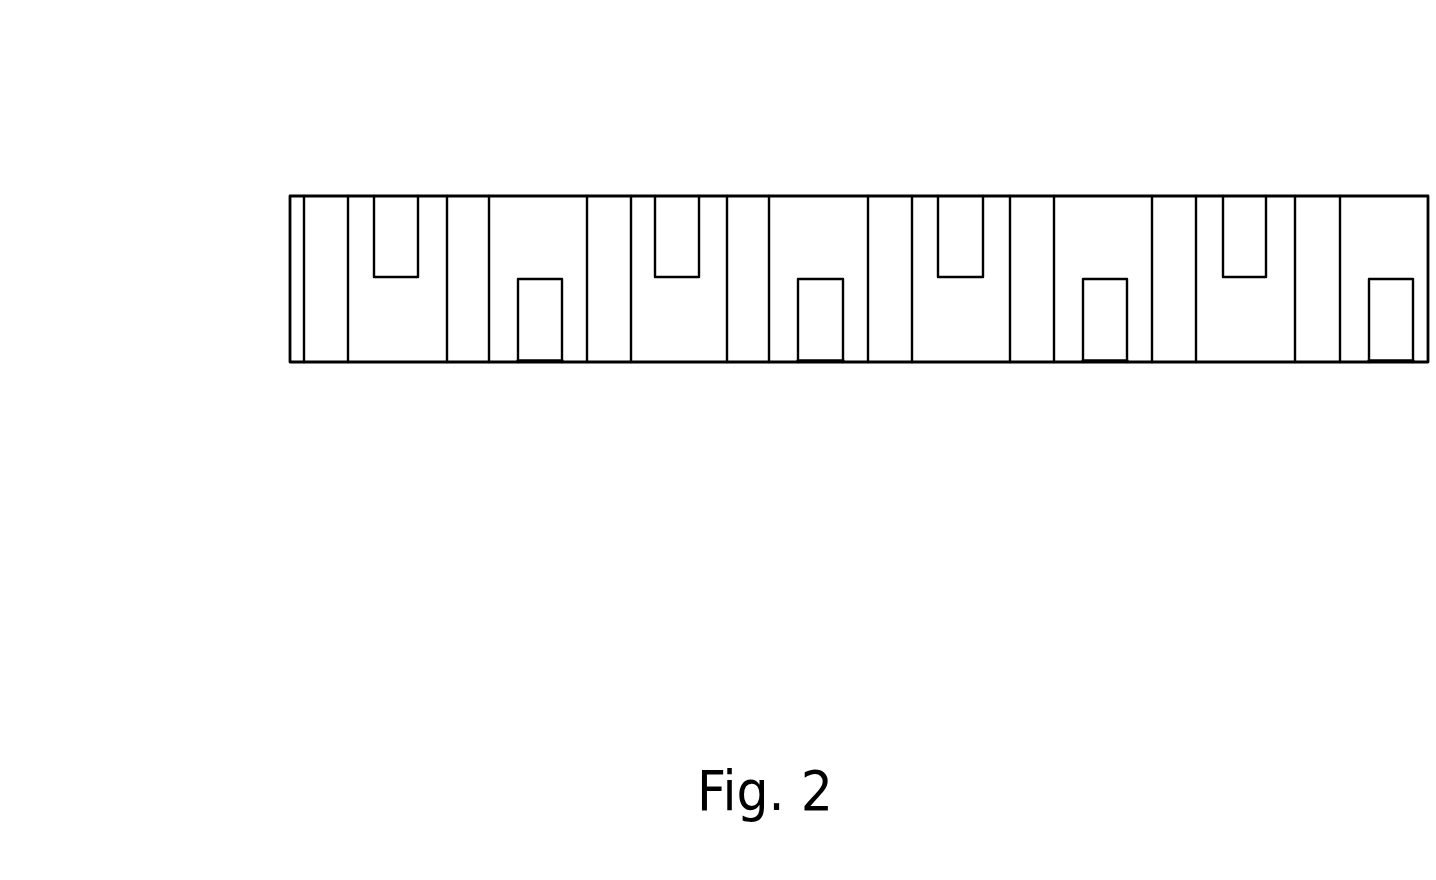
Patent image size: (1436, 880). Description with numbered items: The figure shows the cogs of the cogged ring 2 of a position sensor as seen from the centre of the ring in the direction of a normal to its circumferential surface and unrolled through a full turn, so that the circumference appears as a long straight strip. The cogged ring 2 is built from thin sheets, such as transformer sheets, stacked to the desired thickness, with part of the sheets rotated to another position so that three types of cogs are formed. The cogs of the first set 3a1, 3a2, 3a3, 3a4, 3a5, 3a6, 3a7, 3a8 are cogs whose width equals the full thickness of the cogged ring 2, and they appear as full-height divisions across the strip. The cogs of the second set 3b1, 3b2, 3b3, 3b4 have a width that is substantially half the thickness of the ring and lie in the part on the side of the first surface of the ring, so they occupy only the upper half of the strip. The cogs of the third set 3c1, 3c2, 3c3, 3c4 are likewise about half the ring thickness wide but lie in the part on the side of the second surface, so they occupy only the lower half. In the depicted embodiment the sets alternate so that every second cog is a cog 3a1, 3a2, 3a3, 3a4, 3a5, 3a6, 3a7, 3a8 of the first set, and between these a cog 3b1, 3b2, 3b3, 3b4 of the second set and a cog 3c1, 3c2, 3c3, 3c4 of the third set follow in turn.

The cogged ring 2 is at (287, 301).
The cog of the first set 3a1 is at (332, 347).
The cog of the first set 3a2 is at (470, 347).
The cog of the first set 3a3 is at (617, 345).
The cog of the first set 3a4 is at (755, 345).
The cog of the first set 3a5 is at (895, 345).
The cog of the first set 3a6 is at (1038, 345).
The cog of the first set 3a7 is at (1182, 345).
The cog of the first set 3a8 is at (1317, 345).
The cog of the second set 3b1 is at (402, 203).
The cog of the second set 3b2 is at (677, 203).
The cog of the second set 3b3 is at (962, 202).
The cog of the second set 3b4 is at (1233, 202).
The cog of the third set 3c1 is at (552, 347).
The cog of the third set 3c2 is at (833, 345).
The cog of the third set 3c3 is at (1110, 345).
The cog of the third set 3c4 is at (1395, 345).